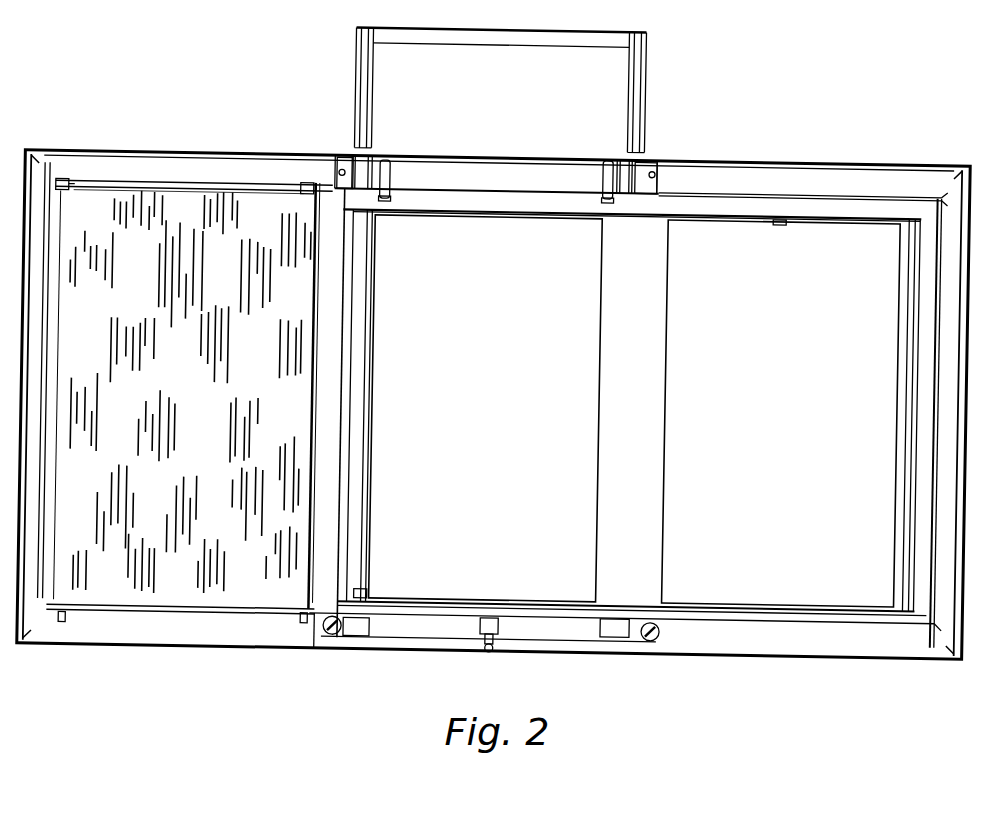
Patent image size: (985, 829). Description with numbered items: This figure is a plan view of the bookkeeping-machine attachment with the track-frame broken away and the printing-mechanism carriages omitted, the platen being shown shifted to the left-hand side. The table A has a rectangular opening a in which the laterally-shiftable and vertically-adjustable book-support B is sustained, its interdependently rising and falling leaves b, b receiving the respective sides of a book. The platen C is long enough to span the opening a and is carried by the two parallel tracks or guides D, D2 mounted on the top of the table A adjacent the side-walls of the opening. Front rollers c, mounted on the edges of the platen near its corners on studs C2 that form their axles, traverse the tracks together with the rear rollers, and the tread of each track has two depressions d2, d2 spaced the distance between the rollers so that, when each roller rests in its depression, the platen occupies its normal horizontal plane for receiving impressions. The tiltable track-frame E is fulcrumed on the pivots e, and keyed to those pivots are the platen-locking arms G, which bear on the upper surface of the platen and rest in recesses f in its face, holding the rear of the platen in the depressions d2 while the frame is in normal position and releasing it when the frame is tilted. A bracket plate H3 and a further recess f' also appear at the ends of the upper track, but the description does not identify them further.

The table A is at (214, 165).
The book-support B is at (639, 417).
The platen C is at (178, 385).
The studs C2 is at (58, 188).
The front rollers c is at (69, 617).
The platen-supporting track D is at (317, 631).
The platen-supporting track D2 is at (518, 191).
The depressions d2 is at (604, 620).
The track-frame E is at (365, 107).
The pivots e is at (381, 162).
The platen-locking arms G is at (388, 178).
The bracket plate H3 is at (663, 158).
The rectangular opening a is at (644, 225).
The leaves b is at (670, 496).
The recesses f is at (79, 206).
The hook f' is at (290, 209).